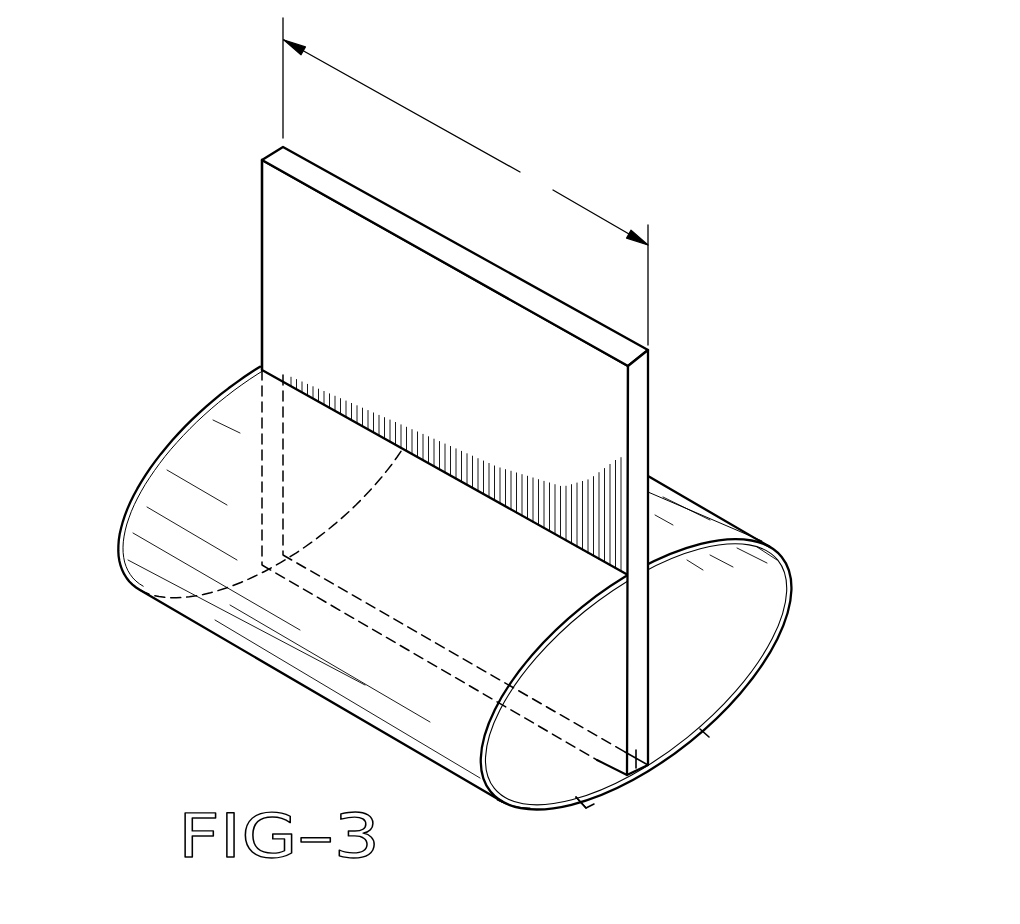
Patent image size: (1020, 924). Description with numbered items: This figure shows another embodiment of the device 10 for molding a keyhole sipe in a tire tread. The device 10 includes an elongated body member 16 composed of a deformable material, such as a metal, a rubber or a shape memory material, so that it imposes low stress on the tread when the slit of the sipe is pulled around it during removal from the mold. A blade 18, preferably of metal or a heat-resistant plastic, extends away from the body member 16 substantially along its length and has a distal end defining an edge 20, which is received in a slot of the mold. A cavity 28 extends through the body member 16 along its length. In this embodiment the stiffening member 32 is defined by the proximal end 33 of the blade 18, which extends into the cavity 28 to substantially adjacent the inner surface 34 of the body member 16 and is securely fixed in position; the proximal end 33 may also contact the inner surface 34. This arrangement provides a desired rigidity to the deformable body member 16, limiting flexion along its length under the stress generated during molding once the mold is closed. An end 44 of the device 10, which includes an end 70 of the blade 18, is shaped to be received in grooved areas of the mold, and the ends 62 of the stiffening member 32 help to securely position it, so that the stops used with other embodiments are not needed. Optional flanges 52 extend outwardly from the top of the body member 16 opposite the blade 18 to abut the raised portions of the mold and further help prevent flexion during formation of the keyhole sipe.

The device 10 is at (464, 459).
The body member 16 is at (485, 632).
The blade 18 is at (473, 468).
The edge 20 is at (586, 330).
The cavity 28 is at (730, 594).
The stiffening member 32 is at (597, 760).
The proximal end 33 is at (283, 560).
The inner surface 34 is at (555, 772).
The end 44 is at (182, 427).
The flanges 52 is at (597, 805).
The ends 62 is at (633, 765).
The end 70 is at (262, 258).